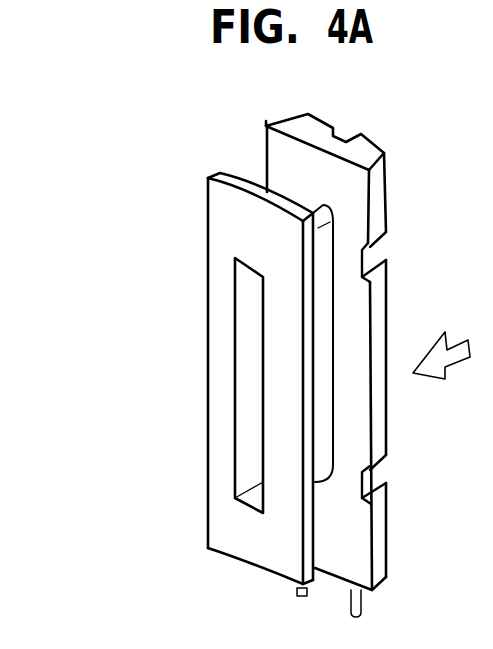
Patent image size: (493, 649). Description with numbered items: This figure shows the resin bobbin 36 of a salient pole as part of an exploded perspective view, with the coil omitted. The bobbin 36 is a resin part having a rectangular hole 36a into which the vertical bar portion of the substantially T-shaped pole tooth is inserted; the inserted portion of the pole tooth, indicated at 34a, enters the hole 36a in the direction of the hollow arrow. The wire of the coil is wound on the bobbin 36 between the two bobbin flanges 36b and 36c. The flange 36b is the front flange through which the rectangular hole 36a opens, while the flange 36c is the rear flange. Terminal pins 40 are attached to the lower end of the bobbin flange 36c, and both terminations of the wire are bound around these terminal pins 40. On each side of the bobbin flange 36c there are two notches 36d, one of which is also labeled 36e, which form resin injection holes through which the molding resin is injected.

The resin bobbin 36 is at (182, 173).
The rectangular hole 36a is at (247, 463).
The bobbin flange 36b is at (227, 229).
The bobbin flange 36c is at (283, 154).
The notch 36d is at (374, 259).
The lower notch 36e is at (388, 484).
The terminal pin 40 is at (302, 600).
The mating member 34a is at (492, 307).